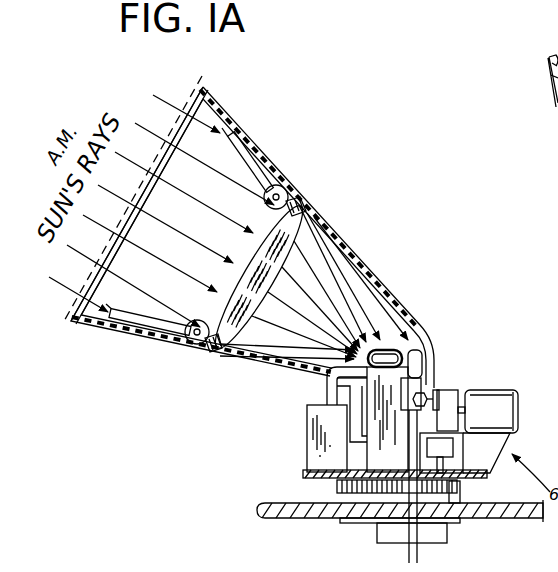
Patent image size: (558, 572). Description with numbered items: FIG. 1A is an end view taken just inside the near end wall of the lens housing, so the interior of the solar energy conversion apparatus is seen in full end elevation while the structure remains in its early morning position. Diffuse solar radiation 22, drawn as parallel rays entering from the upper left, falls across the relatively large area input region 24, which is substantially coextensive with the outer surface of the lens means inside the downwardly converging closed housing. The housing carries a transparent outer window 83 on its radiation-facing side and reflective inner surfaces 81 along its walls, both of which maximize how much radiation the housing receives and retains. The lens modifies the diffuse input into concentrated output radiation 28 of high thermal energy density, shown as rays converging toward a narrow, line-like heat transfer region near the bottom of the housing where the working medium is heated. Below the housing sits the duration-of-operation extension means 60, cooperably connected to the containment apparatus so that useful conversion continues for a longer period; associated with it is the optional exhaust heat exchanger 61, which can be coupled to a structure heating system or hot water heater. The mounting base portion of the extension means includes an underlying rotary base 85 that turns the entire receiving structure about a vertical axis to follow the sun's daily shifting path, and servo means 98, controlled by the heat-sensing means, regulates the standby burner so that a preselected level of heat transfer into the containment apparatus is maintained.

The solar radiation 22 is at (155, 97).
The input region 24 is at (160, 108).
The concentrated output radiation 28 is at (355, 327).
The duration-of-operation extension means 60 is at (216, 357).
The exhaust heat exchanger 61 is at (313, 460).
The reflective inner surfaces 81 is at (104, 326).
The transparent outer window 83 is at (160, 113).
The rotary base 85 is at (453, 500).
The servo means 98 is at (452, 383).